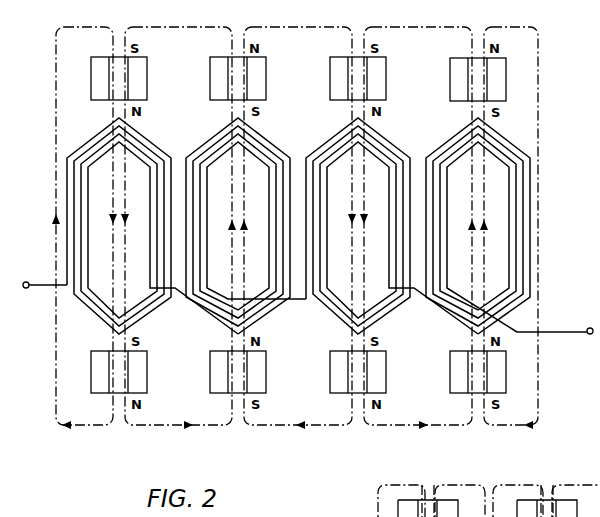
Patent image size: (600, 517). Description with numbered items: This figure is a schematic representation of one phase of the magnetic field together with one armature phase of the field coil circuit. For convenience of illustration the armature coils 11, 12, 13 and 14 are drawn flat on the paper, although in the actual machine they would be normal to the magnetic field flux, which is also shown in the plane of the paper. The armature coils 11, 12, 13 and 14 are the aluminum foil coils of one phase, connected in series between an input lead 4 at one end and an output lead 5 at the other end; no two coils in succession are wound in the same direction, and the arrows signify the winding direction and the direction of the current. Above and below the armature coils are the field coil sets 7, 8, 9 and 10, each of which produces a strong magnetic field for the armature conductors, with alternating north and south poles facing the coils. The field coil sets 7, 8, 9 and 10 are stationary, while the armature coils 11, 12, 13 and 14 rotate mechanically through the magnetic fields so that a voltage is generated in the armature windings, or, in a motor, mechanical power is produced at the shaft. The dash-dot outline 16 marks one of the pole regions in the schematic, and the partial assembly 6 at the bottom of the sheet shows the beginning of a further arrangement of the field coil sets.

The input lead 4 is at (45, 295).
The output lead 5 is at (565, 322).
The magnet assembly 6 is at (408, 485).
The field coil set 7 is at (101, 57).
The field coil set 8 is at (215, 57).
The field coil set 9 is at (337, 57).
The field coil set 10 is at (457, 58).
The armature coil 11 is at (146, 311).
The armature coil 12 is at (262, 311).
The armature coil 13 is at (381, 308).
The armature coil 14 is at (507, 305).
The pole pitch region 16 is at (182, 27).